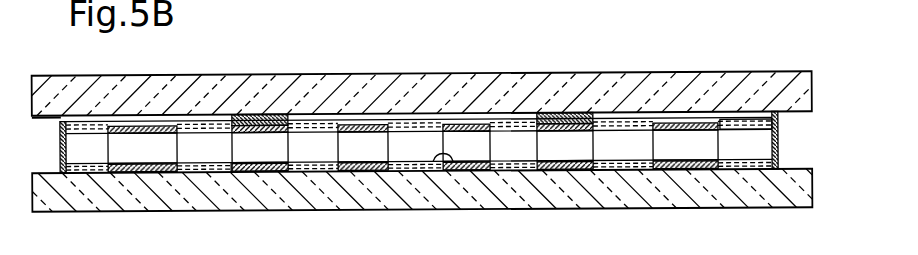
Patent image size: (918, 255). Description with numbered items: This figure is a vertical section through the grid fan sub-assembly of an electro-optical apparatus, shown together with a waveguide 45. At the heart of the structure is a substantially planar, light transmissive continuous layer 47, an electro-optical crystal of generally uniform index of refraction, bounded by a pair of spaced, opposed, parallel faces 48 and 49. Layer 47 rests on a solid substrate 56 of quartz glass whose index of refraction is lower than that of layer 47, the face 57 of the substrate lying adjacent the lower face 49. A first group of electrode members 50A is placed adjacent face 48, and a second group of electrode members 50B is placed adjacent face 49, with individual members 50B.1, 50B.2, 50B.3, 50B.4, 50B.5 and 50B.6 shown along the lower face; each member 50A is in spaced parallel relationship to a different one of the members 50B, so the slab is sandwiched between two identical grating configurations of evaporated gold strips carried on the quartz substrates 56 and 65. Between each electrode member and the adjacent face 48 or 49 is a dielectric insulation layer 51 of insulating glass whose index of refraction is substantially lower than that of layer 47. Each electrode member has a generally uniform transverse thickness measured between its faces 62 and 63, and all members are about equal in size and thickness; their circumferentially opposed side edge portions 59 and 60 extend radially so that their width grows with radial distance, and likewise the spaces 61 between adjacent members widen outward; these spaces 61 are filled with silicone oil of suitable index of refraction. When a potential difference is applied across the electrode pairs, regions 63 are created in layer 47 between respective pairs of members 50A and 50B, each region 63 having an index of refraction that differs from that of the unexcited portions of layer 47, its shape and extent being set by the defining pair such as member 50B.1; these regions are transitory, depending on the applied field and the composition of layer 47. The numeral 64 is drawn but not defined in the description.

The waveguide 45 is at (257, 146).
The light transmissive continuous layer 47 is at (744, 125).
The face 48 is at (518, 125).
The face 49 is at (520, 173).
The first group electrode member 50A is at (453, 125).
The second group electrode member 50B is at (598, 177).
The electrode member 50B.1 is at (146, 173).
The electrode member 50B.2 is at (262, 173).
The electrode member 50B.3 is at (364, 173).
The electrode member 50B.4 is at (470, 173).
The electrode member 50B.5 is at (568, 173).
The electrode member 50B.6 is at (709, 171).
The dielectric insulation layer 51 is at (125, 163).
The solid substrate 56 is at (786, 195).
The face 57 is at (786, 147).
The side edge portion 59 is at (543, 132).
The side edge portion 60 is at (728, 125).
The space 61 is at (219, 163).
The electrode member face 62 is at (191, 150).
The region 63 is at (280, 142).
The spacer frame 64 is at (72, 122).
The substrate 65 is at (115, 90).